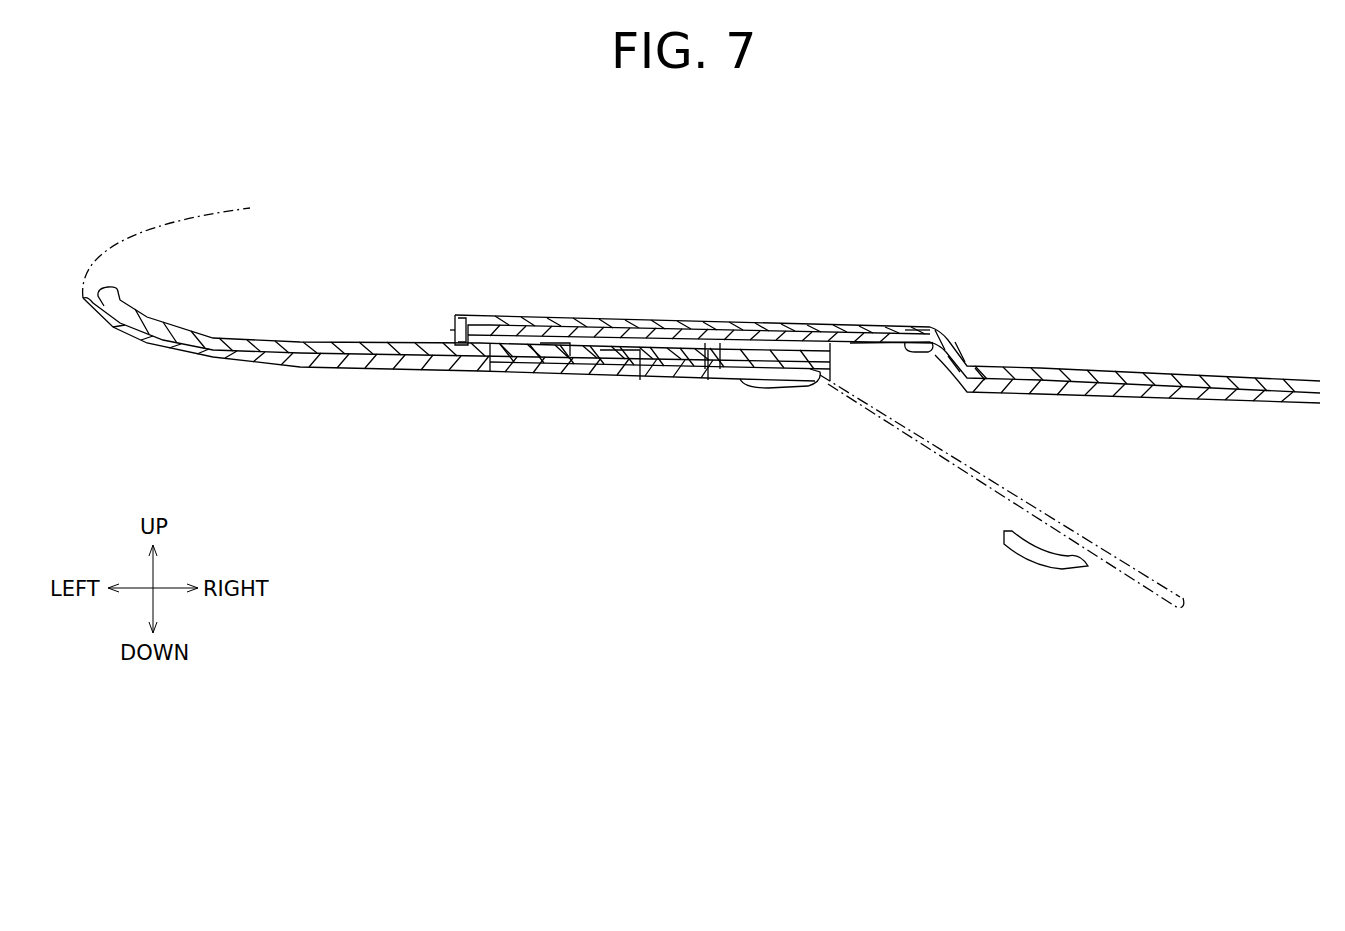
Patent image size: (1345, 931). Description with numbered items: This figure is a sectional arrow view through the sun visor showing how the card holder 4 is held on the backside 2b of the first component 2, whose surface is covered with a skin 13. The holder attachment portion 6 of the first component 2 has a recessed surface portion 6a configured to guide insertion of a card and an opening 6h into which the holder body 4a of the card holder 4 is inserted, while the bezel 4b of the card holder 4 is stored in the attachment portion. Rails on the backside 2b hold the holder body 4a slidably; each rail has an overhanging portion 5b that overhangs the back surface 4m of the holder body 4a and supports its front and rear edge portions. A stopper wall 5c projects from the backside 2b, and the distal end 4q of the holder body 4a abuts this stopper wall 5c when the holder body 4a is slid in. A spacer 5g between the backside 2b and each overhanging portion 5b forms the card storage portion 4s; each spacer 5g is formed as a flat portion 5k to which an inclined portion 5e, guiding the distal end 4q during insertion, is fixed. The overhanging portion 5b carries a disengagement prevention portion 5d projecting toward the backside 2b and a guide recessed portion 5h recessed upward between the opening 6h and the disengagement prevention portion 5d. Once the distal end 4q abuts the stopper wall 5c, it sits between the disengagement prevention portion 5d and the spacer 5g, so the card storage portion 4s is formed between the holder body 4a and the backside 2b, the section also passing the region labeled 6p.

The first component 2 is at (305, 330).
The backside of the first component 2b is at (678, 350).
The skin 13 is at (388, 373).
The card holder 4 is at (1050, 505).
The holder body 4a is at (585, 345).
The bezel 4b is at (782, 396).
The back surface of the holder body 4m is at (620, 350).
The distal end of the holder body 4q is at (452, 331).
The card storage portion 4s is at (705, 372).
The overhanging portion 5b is at (738, 327).
The stopper wall 5c is at (455, 320).
The disengagement prevention portion 5d is at (518, 325).
The inclined portion 5e is at (553, 341).
The spacer 5g is at (490, 360).
The guide recessed portion 5h is at (640, 372).
The flat portion 5k is at (468, 318).
The holder attachment portion 6 is at (850, 352).
The recessed surface portion 6a is at (960, 360).
The opening 6h is at (845, 342).
The weather strip protrusion 6p is at (920, 328).